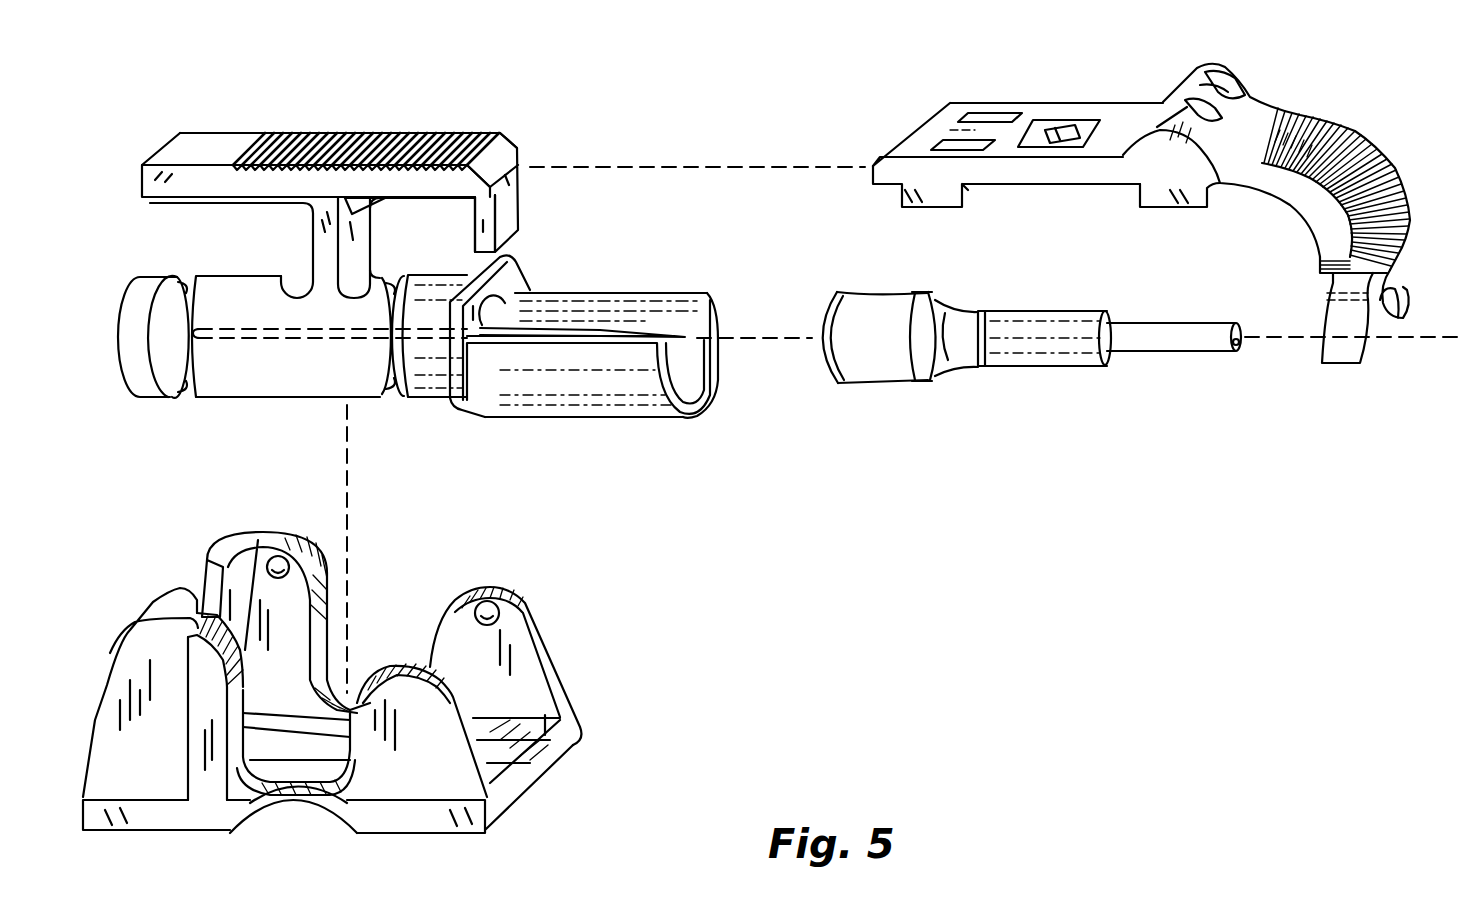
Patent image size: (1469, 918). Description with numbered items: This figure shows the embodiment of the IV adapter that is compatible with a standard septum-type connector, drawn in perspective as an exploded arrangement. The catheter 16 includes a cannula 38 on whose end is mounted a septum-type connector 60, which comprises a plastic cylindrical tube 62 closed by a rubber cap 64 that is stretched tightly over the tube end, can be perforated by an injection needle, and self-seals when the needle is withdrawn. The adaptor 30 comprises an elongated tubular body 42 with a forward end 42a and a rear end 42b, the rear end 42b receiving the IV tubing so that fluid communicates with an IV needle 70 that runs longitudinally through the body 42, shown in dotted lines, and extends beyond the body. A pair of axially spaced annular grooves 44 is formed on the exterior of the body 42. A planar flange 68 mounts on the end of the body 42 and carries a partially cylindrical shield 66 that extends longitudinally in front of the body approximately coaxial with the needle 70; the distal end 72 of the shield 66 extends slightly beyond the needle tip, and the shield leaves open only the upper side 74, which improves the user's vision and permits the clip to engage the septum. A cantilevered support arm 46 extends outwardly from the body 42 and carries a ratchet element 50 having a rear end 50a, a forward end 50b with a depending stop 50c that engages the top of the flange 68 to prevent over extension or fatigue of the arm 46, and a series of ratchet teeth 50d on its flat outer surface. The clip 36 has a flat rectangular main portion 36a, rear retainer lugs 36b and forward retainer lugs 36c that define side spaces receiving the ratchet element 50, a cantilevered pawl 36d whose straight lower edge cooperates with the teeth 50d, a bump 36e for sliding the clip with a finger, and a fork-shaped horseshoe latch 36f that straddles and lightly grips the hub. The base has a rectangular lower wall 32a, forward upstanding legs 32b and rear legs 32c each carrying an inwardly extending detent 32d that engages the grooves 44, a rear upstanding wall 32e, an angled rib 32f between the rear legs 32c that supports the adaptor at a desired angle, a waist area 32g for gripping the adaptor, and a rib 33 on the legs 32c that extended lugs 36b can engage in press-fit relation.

The catheter 16 is at (1015, 388).
The adaptor 30 is at (235, 408).
The lower wall 32a is at (517, 782).
The upstanding legs 32b is at (545, 645).
The legs 32c is at (330, 560).
The detent 32d is at (262, 560).
The rear upstanding wall 32e is at (222, 550).
The rib 32f is at (282, 720).
The waist area 32g is at (253, 800).
The rib 33 is at (290, 545).
The clip 36 is at (1165, 193).
The main portion 36a is at (1105, 145).
The rear retainer lugs 36b is at (940, 192).
The forward retainer lugs 36c is at (1186, 190).
The pawl 36d is at (1070, 126).
The bump 36e is at (1183, 88).
The latch 36f is at (1407, 300).
The cannula 38 is at (1175, 332).
The tubular body 42 is at (450, 420).
The forward end 42a is at (550, 283).
The rear end 42b is at (135, 290).
The annular grooves 44 is at (183, 292).
The support arm 46 is at (350, 238).
The ratchet element 50 is at (347, 159).
The rear end 50a is at (172, 143).
The forward end 50b is at (510, 153).
The stop 50c is at (512, 199).
The ratchet teeth 50d is at (393, 130).
The septum-type connector 60 is at (856, 332).
The cylindrical tube 62 is at (1028, 322).
The cap 64 is at (882, 375).
The shield 66 is at (673, 297).
The flange 68 is at (312, 248).
The IV needle 70 is at (256, 325).
The distal end 72 is at (700, 397).
The upper side 74 is at (578, 310).